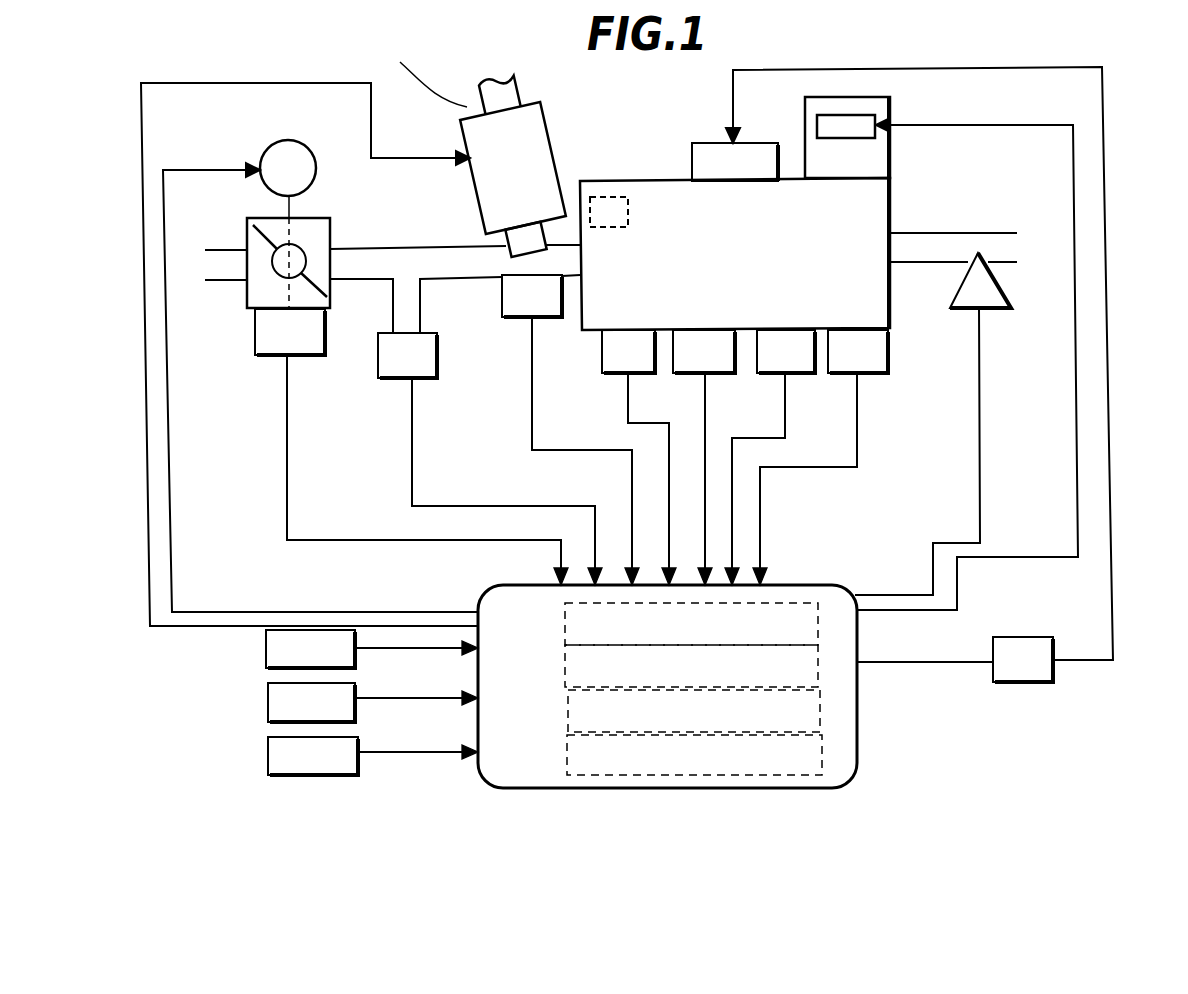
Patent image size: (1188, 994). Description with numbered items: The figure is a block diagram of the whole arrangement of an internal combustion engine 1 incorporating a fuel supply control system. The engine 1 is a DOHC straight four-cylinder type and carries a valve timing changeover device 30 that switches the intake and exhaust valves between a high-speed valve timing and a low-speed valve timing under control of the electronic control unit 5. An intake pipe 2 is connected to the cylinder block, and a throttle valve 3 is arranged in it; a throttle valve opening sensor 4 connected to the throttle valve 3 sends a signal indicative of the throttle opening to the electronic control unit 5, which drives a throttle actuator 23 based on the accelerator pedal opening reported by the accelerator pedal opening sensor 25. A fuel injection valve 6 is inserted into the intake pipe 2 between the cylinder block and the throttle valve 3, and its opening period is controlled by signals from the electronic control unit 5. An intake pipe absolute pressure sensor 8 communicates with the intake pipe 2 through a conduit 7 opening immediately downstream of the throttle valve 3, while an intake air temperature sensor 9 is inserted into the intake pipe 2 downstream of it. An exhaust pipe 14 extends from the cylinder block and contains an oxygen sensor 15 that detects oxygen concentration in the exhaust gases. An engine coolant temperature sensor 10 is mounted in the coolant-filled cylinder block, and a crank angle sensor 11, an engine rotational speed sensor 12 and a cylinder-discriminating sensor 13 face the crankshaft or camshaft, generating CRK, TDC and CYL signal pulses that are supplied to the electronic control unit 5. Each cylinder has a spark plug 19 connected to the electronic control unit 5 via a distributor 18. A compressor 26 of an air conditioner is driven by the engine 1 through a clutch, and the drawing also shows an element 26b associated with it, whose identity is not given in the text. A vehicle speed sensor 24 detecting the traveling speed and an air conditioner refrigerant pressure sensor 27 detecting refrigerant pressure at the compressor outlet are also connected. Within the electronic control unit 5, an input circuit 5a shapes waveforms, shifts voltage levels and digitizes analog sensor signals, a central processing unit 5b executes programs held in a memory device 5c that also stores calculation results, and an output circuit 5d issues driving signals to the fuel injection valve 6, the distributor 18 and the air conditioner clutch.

The internal combustion engine 1 is at (638, 181).
The intake pipe 2 is at (413, 243).
The throttle valve 3 is at (246, 297).
The throttle valve opening (TH) sensor 4 is at (326, 340).
The electronic control unit (ECU) 5 is at (696, 652).
The input circuit 5a is at (830, 605).
The central processing unit (CPU) 5b is at (832, 662).
The memory device 5c is at (836, 712).
The output circuit 5d is at (836, 760).
The fuel injection valve 6 is at (550, 135).
The conduit 7 is at (421, 300).
The intake pipe absolute pressure (PBA) sensor 8 is at (438, 350).
The intake air temperature (TA) sensor 9 is at (540, 318).
The engine coolant temperature (TW) sensor 10 is at (635, 374).
The crank angle (CRK) sensor 11 is at (713, 374).
The engine rotational speed (NE) sensor 12 is at (790, 374).
The cylinder-discriminating (CYL) sensor 13 is at (858, 374).
The exhaust pipe 14 is at (910, 265).
The oxygen sensor 15 is at (990, 312).
The distributor 18 is at (1020, 637).
The spark plug 19 is at (762, 143).
The throttle actuator 23 is at (268, 150).
The vehicle speed sensor 24 is at (268, 697).
The accelerator pedal opening (AP) sensor 25 is at (266, 645).
The compressor 26 is at (891, 155).
The valve lift sensor 26b is at (878, 137).
The air conditioner refrigerant pressure sensor 27 is at (268, 752).
The valve timing changeover device 30 is at (606, 196).